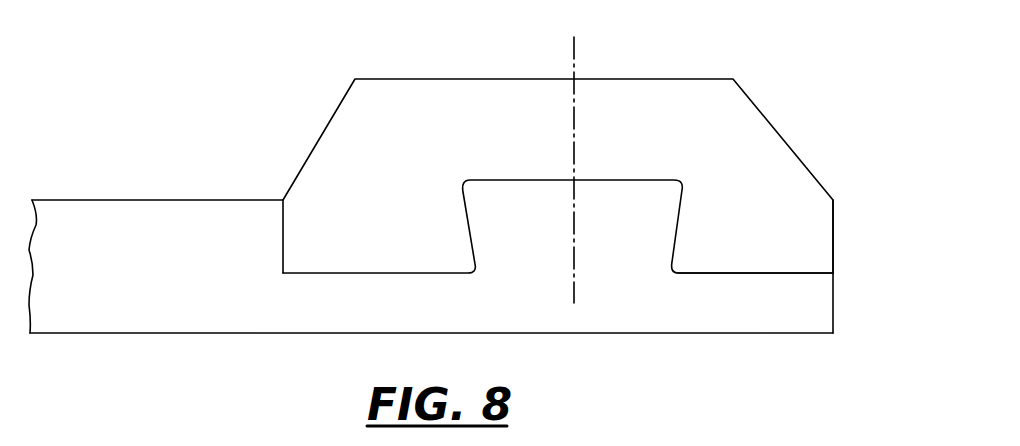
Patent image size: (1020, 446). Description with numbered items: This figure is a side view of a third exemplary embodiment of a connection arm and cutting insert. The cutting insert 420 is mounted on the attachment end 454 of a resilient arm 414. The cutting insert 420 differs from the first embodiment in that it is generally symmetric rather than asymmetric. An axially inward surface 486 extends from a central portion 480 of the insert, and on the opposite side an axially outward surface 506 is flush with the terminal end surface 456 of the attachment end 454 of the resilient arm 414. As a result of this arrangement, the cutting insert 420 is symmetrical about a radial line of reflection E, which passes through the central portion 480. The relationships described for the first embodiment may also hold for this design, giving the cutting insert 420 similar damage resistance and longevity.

The resilient arm 414 is at (182, 345).
The cutting insert 420 is at (633, 47).
The central portion 480 is at (465, 115).
The axially inward surface 486 is at (282, 227).
The axially outward surface 506 is at (833, 235).
The terminal end surface 456 is at (833, 312).
The attachment end 454 is at (713, 313).
The radial line of reflection E is at (574, 108).